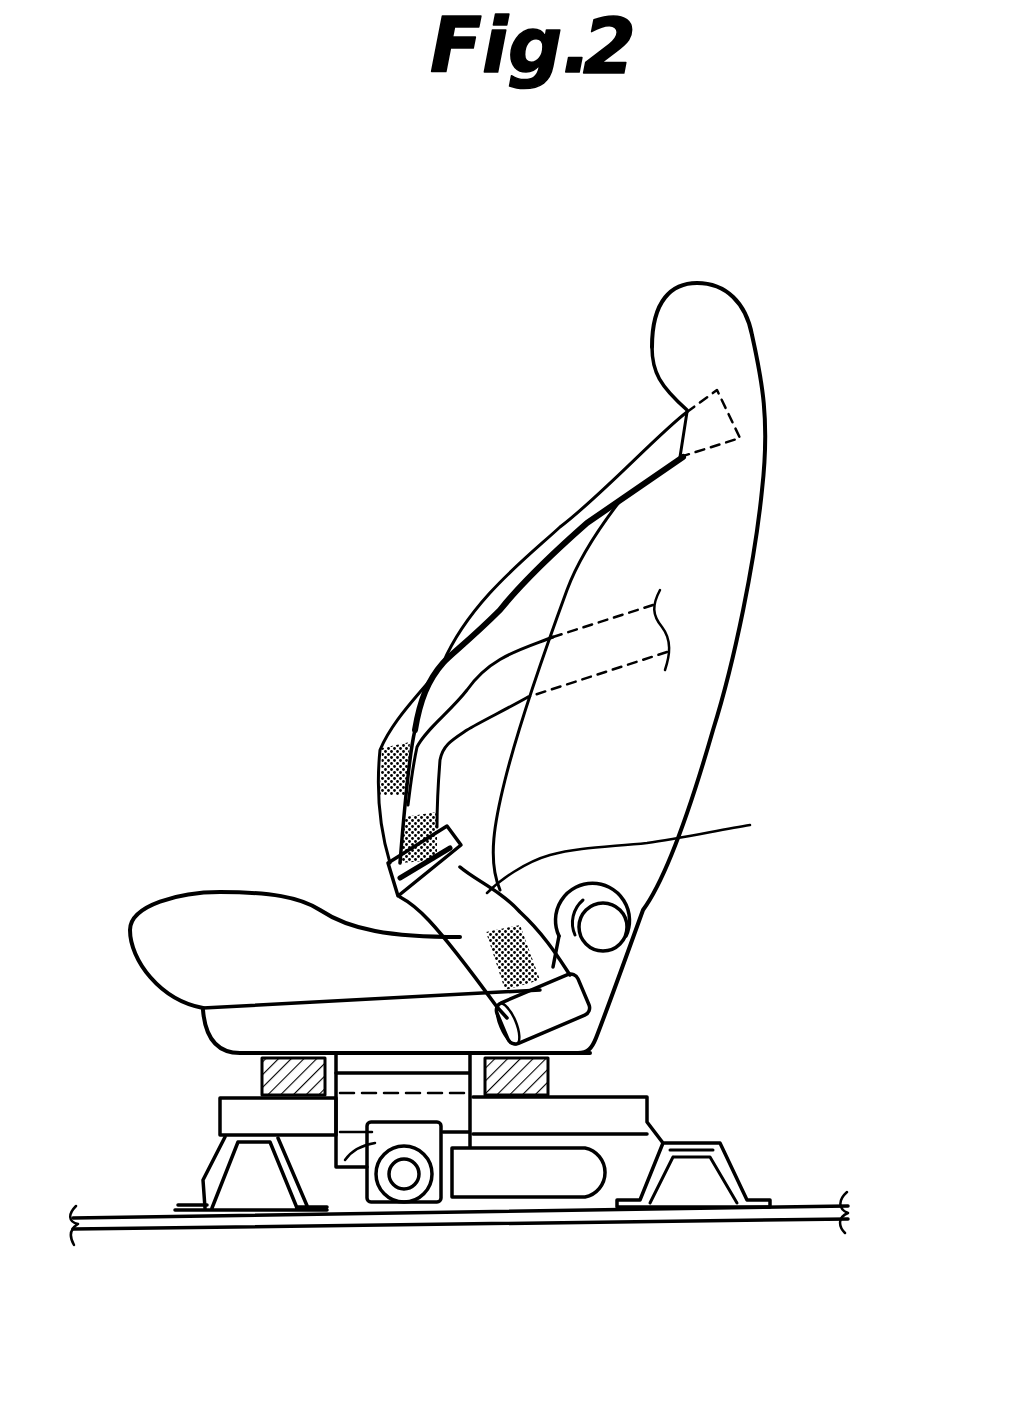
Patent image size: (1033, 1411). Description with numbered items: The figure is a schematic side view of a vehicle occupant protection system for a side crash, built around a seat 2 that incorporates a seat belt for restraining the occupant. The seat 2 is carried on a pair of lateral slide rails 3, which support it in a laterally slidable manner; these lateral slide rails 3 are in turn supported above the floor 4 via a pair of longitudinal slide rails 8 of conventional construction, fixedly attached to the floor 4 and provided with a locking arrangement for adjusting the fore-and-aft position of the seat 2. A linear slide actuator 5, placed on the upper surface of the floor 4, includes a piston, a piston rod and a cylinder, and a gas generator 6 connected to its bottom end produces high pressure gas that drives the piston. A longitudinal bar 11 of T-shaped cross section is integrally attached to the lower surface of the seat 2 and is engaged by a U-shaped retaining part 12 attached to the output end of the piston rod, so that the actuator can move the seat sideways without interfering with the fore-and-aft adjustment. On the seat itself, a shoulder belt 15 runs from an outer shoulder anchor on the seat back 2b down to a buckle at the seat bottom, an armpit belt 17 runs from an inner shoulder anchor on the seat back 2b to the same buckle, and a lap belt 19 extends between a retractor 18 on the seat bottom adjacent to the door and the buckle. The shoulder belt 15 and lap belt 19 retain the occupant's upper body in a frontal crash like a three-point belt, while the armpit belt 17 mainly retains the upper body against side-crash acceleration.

The seat 2 is at (192, 907).
The seat back 2b is at (749, 515).
The lateral slide rails 3 is at (262, 1083).
The floor 4 is at (137, 1218).
The linear slide actuator 5 is at (403, 1197).
The gas generator 6 is at (492, 1187).
The longitudinal slide rails 8 is at (636, 1092).
The longitudinal bar 11 is at (347, 1112).
The U-shaped retaining part 12 is at (338, 1167).
The shoulder belt 15 is at (563, 534).
The armpit belt 17 is at (476, 692).
The retractor 18 is at (567, 1002).
The lap belt 19 is at (483, 887).